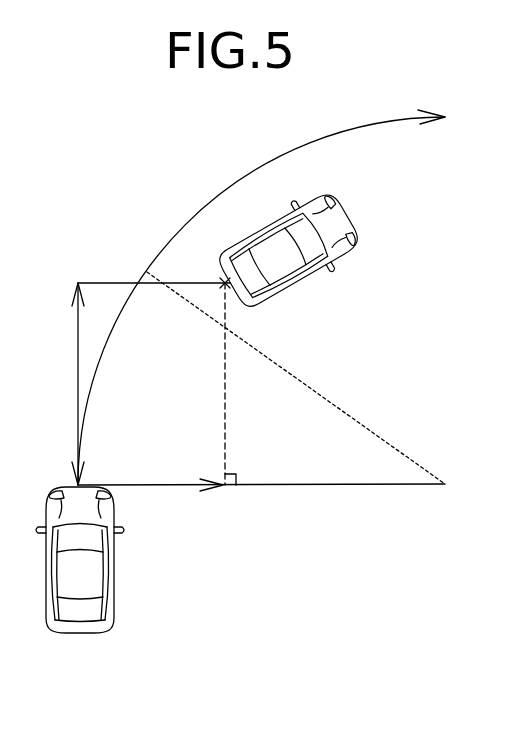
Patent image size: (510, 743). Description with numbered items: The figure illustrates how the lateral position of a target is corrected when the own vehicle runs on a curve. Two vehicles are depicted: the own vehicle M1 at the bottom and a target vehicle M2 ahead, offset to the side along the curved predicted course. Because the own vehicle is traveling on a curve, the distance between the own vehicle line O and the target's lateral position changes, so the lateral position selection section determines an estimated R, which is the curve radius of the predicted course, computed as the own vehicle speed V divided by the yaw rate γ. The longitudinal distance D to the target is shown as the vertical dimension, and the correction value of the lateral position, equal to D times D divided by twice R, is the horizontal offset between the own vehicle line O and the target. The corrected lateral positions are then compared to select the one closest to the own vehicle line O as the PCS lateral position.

The own vehicle M1 is at (113, 565).
The other vehicle M2 is at (383, 207).
The own vehicle line O is at (115, 328).
The distance D is at (70, 384).
The estimated R is at (384, 337).